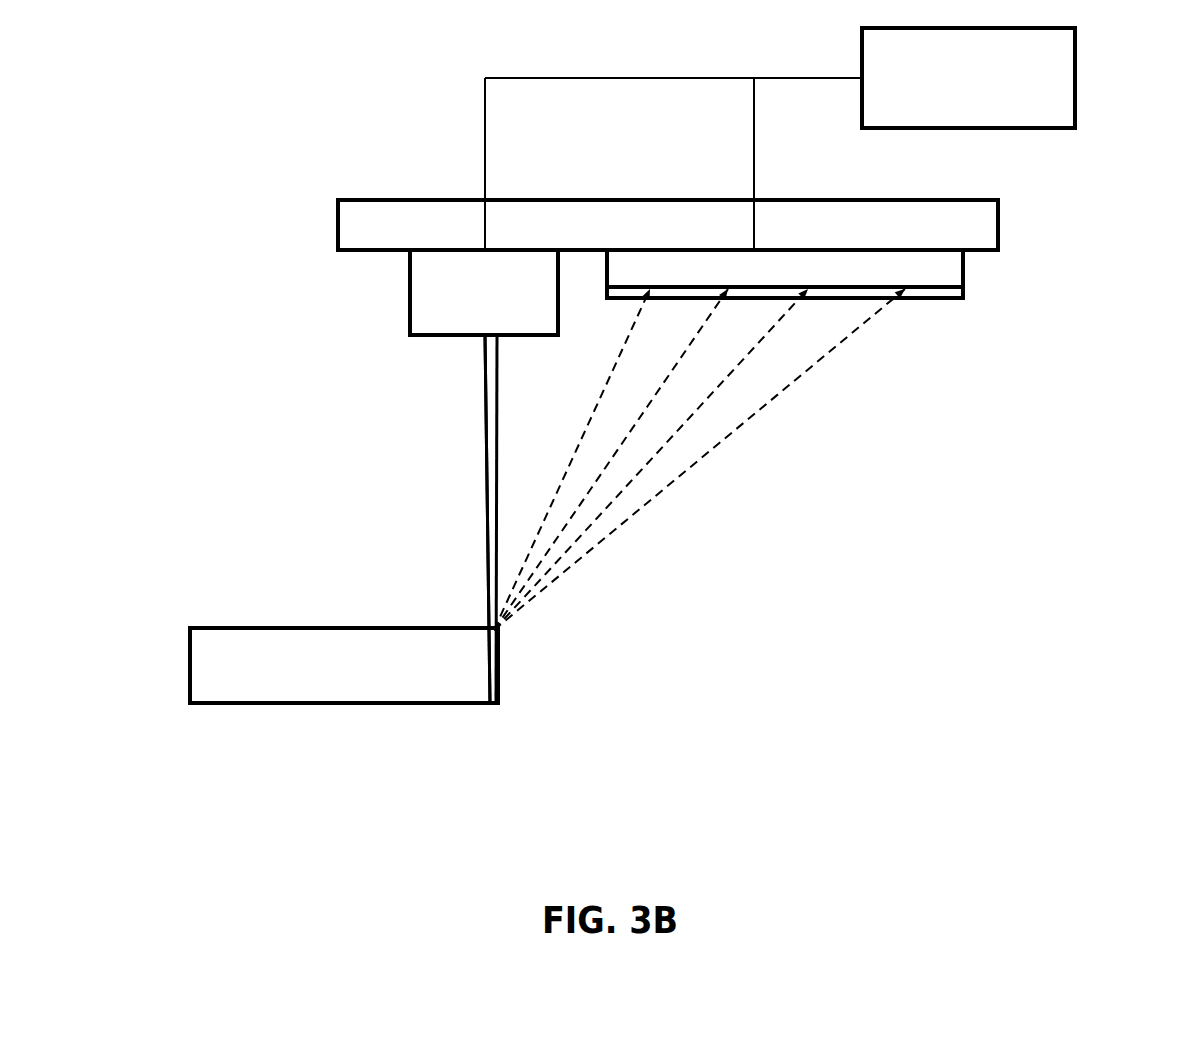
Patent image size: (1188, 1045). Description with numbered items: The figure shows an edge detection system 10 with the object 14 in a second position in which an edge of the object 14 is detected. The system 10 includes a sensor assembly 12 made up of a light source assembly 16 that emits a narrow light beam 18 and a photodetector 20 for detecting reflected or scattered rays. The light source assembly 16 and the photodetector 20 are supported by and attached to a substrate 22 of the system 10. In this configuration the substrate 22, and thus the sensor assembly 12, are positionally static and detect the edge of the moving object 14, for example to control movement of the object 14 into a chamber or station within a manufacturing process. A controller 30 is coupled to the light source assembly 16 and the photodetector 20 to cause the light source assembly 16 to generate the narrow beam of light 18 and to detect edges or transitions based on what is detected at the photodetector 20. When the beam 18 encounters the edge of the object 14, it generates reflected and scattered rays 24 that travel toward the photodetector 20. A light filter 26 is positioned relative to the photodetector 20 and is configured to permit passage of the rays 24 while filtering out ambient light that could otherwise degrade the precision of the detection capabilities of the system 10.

The system 10 is at (300, 160).
The sensor assembly 12 is at (542, 382).
The object 14 is at (258, 628).
The light source assembly 16 is at (435, 287).
The narrow light beam 18 is at (482, 520).
The photodetector 20 is at (928, 272).
The substrate 22 is at (950, 225).
The reflected/scattered rays 24 is at (707, 455).
The light filter 26 is at (965, 293).
The controller 30 is at (862, 52).